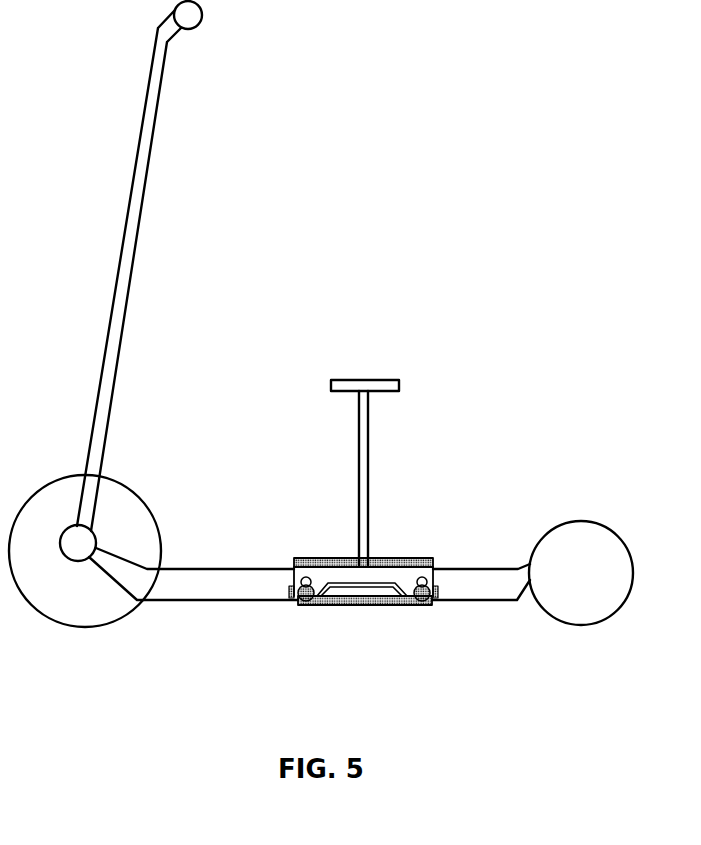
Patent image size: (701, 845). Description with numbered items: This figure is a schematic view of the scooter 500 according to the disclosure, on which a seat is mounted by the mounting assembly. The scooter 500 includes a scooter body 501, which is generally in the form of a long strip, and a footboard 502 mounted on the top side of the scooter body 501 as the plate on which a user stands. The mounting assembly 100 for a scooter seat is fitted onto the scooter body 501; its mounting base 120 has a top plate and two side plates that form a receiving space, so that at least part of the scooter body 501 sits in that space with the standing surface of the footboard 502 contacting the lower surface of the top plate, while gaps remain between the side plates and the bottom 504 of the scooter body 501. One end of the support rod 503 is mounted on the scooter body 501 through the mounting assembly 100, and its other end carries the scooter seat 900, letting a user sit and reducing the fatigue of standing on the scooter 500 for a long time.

The scooter 500 is at (152, 155).
The scooter body 501 is at (173, 577).
The footboard 502 is at (473, 568).
The support rod 503 is at (369, 476).
The bottom of the scooter body 504 is at (283, 593).
The scooter seat 900 is at (380, 381).
The mounting assembly 100 is at (339, 560).
The mounting base 120 is at (343, 567).